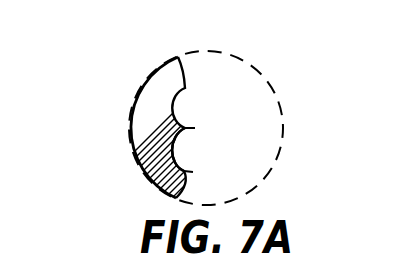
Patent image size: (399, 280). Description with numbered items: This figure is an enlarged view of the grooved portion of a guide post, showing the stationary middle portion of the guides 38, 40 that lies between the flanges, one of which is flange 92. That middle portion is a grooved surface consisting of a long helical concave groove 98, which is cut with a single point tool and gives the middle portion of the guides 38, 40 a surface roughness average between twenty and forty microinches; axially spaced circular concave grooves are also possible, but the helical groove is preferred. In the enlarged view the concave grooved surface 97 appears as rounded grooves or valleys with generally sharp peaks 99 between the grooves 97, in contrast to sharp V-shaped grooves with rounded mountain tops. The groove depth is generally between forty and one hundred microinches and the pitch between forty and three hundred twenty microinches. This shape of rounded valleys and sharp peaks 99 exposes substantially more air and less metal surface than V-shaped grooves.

The guide 38 is at (212, 120).
The guide 40 is at (155, 87).
The concave grooved surface 97 is at (173, 152).
The helical concave groove 98 is at (219, 125).
The sharp peaks 99 is at (185, 88).
The flange 92 is at (17, 267).